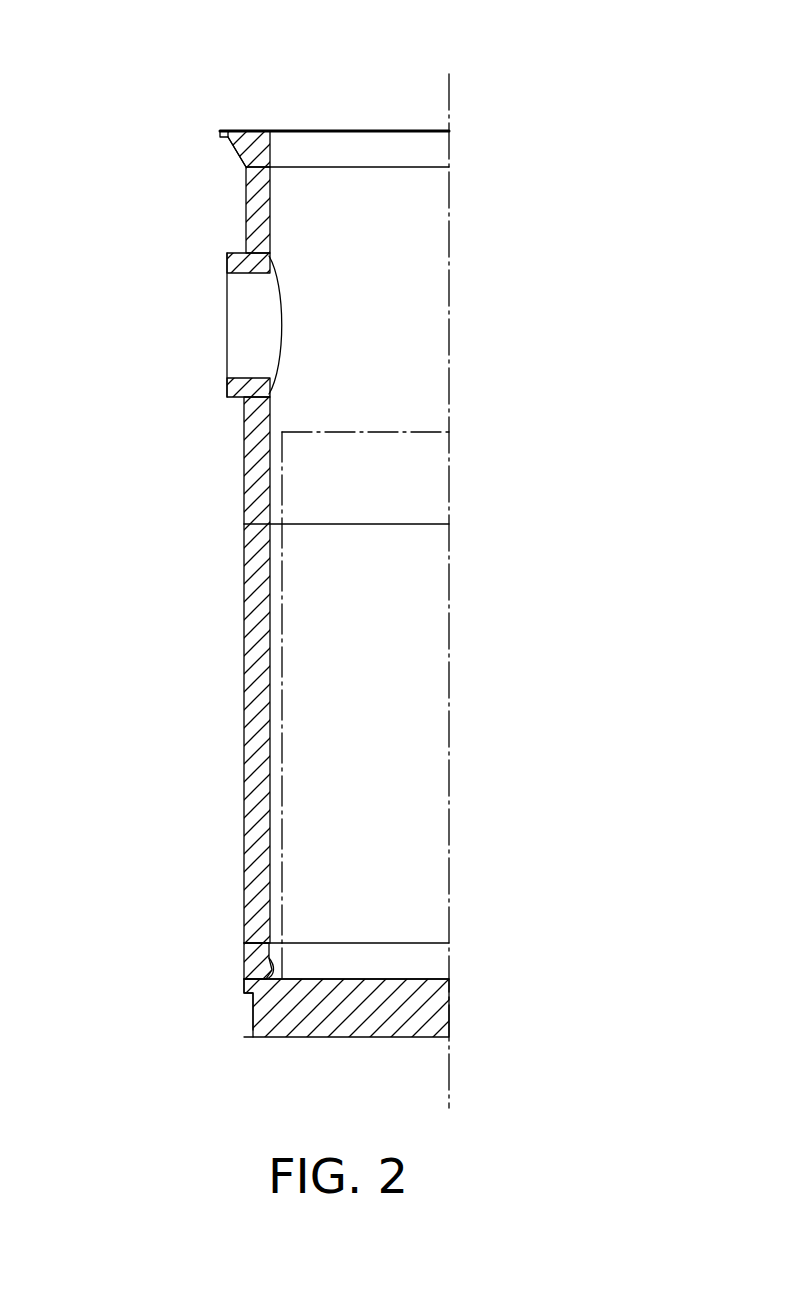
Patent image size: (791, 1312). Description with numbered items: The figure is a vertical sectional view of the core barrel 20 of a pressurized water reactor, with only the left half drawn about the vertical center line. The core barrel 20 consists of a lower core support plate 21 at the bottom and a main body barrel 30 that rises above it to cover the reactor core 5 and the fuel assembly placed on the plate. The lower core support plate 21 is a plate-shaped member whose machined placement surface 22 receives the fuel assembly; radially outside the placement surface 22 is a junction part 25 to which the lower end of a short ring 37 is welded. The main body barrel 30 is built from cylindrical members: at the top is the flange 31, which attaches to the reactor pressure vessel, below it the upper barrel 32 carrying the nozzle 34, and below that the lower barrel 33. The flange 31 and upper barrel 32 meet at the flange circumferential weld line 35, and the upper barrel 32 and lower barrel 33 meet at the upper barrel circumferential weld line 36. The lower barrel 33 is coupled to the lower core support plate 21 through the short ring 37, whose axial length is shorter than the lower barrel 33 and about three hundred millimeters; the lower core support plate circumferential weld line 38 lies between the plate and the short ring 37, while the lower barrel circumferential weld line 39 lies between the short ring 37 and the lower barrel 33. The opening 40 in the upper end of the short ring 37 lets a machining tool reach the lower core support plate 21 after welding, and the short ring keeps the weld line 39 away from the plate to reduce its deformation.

The core barrel 20 is at (216, 95).
The main body barrel 30 is at (172, 463).
The flange 31 is at (218, 132).
The flange circumferential weld line 35 is at (246, 166).
The upper barrel 32 is at (246, 217).
The nozzle 34 is at (244, 382).
The lower barrel 33 is at (244, 700).
The upper barrel circumferential weld line 36 is at (244, 524).
The lower barrel circumferential weld line 39 is at (243, 943).
The short ring 37 is at (243, 965).
The lower core support plate circumferential weld line 38 is at (243, 980).
The junction part 25 is at (256, 972).
The opening 40 is at (330, 953).
The placement surface 22 is at (382, 978).
The lower core support plate 21 is at (311, 1043).
The reactor core 5 is at (365, 666).